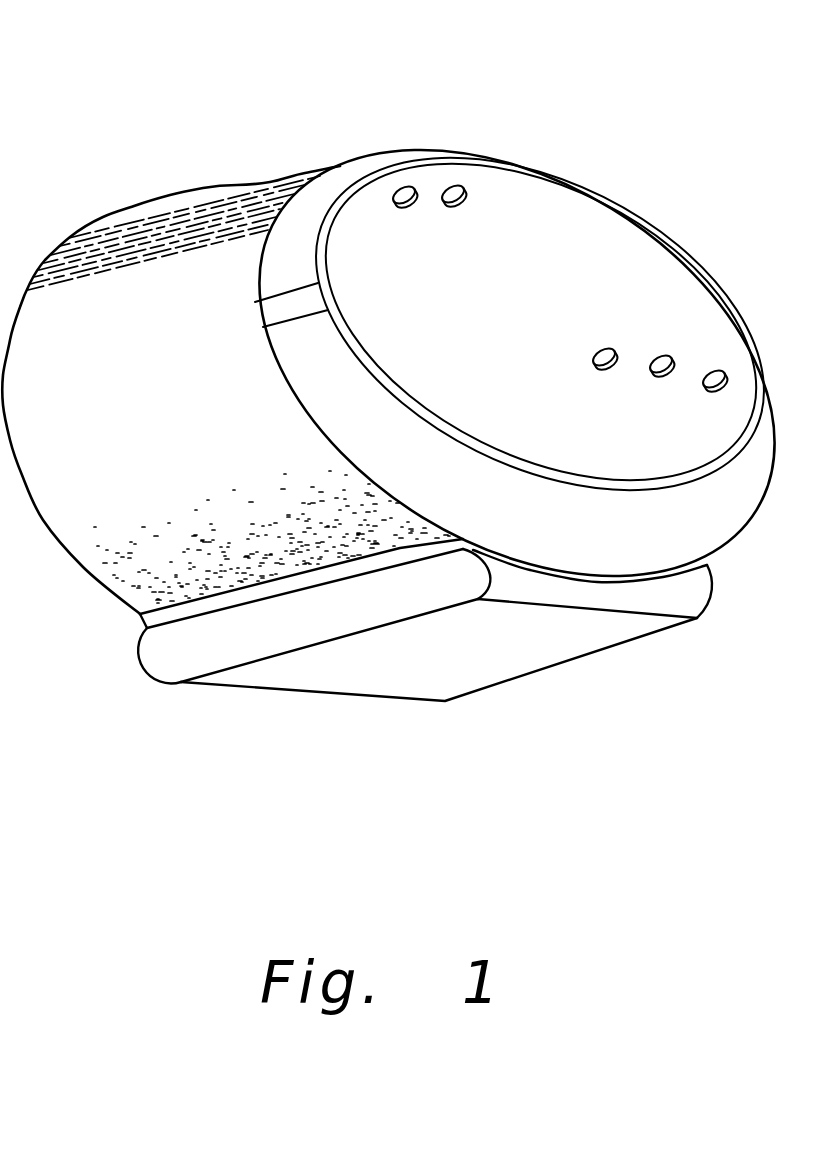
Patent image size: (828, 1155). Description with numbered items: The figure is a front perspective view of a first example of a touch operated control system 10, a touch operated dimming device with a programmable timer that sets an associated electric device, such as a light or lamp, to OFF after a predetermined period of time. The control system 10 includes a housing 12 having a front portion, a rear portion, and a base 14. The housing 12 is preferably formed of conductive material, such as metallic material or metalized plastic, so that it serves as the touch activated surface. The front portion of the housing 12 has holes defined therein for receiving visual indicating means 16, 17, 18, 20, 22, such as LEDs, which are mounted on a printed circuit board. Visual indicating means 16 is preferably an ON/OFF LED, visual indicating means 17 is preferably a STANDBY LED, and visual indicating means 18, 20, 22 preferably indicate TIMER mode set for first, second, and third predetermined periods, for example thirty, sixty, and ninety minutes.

The touch operated control system 10 is at (600, 130).
The housing 12 is at (213, 200).
The base 14 is at (273, 655).
The visual indicating means 16 is at (412, 204).
The visual indicating means 17 is at (464, 196).
The visual indicating means 18 is at (598, 365).
The visual indicating means 20 is at (660, 358).
The visual indicating means 22 is at (706, 388).